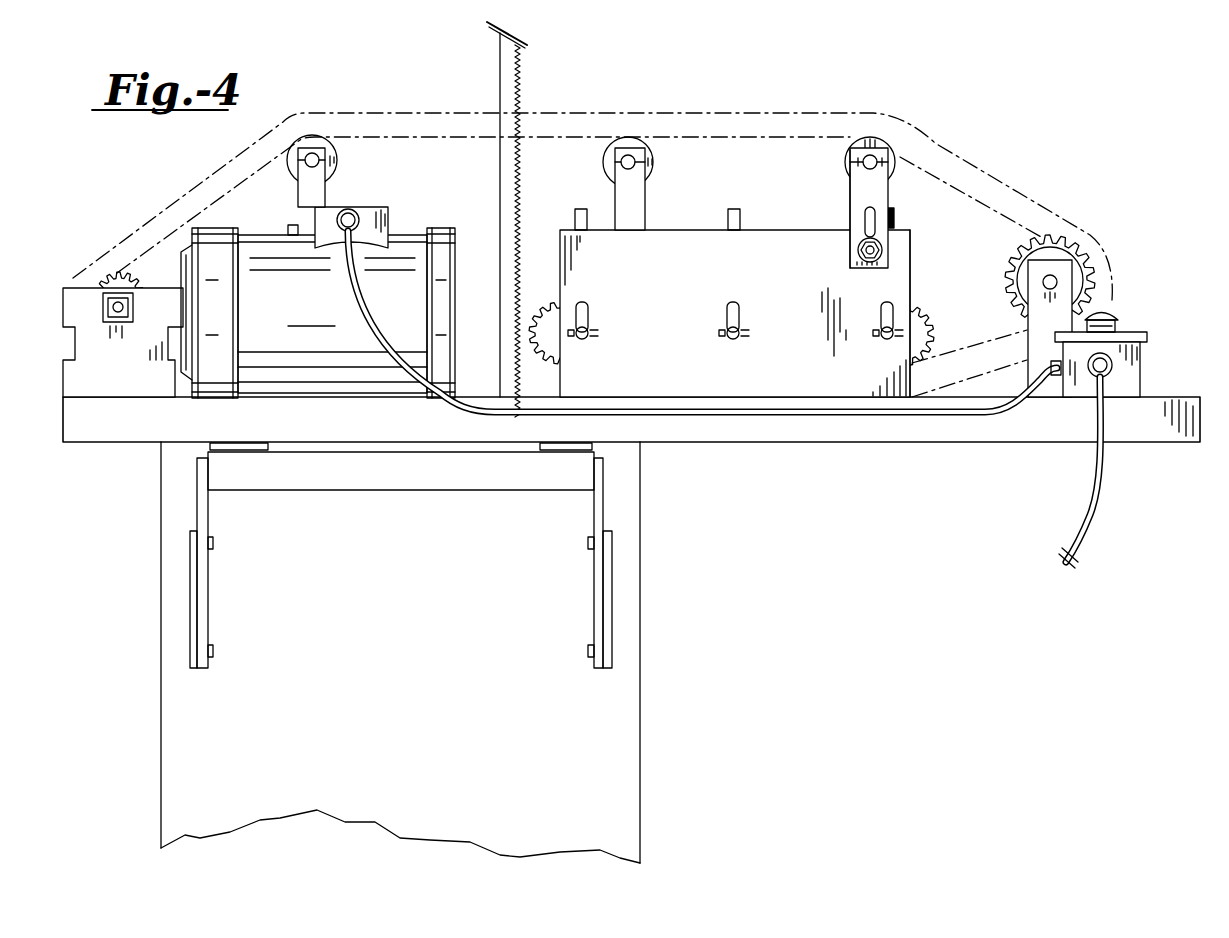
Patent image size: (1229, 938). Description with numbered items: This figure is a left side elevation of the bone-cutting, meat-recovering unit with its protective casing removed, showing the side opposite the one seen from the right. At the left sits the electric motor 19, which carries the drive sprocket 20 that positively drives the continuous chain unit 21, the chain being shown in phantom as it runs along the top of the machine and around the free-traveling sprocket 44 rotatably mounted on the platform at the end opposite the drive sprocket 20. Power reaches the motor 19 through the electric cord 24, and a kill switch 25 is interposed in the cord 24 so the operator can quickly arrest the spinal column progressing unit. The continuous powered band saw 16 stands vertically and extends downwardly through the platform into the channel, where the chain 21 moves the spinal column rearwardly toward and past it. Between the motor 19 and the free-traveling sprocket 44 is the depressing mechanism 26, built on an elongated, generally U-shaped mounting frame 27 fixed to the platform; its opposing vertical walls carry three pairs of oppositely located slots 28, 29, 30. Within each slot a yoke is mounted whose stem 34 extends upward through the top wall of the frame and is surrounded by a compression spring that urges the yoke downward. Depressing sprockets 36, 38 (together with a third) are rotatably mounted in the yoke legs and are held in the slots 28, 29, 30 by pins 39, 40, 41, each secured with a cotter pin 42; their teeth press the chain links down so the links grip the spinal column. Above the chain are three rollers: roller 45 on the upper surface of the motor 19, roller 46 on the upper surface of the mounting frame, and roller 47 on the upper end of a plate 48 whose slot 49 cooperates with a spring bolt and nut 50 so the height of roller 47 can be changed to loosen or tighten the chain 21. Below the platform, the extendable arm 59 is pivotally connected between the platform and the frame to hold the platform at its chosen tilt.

The powered band saw 16 is at (522, 88).
The electric motor 19 is at (420, 231).
The drive sprocket 20 is at (118, 278).
The continuous chain unit 21 is at (977, 165).
The electric cord 24 is at (815, 418).
The kill switch 25 is at (1112, 318).
The depressing mechanism 26 is at (783, 240).
The mounting frame 27 is at (912, 255).
The slot 28 is at (852, 323).
The slot 29 is at (751, 320).
The slot 30 is at (607, 326).
The stem 34 is at (579, 210).
The depressing sprocket 36 is at (913, 300).
The depressing sprocket 38 is at (548, 298).
The pin 39 is at (888, 340).
The pin 40 is at (737, 340).
The pin 41 is at (586, 338).
The cotter pin 42 is at (735, 322).
The free-traveling sprocket 44 is at (1063, 238).
The roller 45 is at (334, 152).
The roller 46 is at (648, 155).
The roller 47 is at (896, 152).
The plate 48 is at (890, 186).
The slot 49 is at (850, 180).
The spring bolt and nut 50 is at (856, 250).
The extendable arm 59 is at (208, 516).